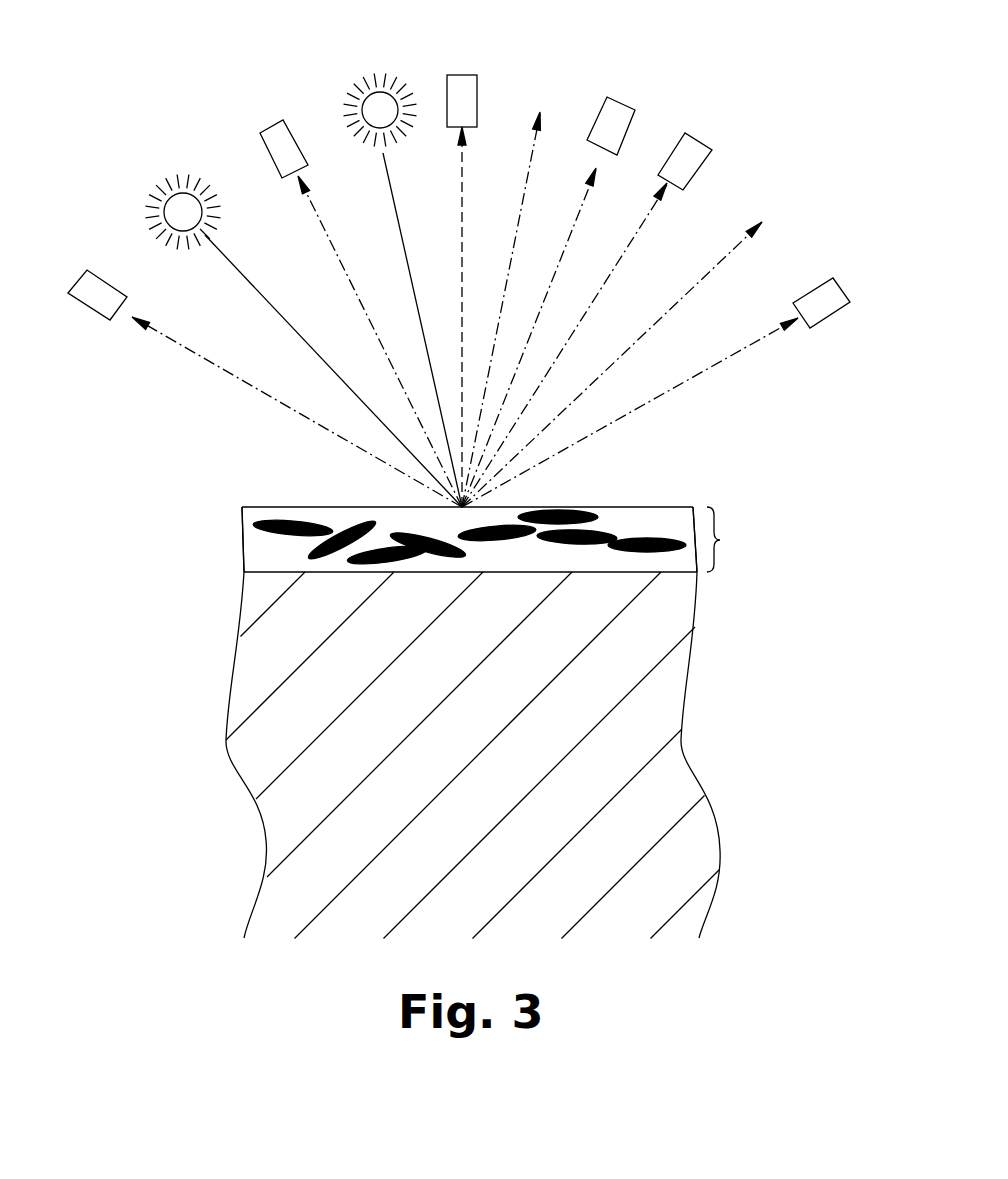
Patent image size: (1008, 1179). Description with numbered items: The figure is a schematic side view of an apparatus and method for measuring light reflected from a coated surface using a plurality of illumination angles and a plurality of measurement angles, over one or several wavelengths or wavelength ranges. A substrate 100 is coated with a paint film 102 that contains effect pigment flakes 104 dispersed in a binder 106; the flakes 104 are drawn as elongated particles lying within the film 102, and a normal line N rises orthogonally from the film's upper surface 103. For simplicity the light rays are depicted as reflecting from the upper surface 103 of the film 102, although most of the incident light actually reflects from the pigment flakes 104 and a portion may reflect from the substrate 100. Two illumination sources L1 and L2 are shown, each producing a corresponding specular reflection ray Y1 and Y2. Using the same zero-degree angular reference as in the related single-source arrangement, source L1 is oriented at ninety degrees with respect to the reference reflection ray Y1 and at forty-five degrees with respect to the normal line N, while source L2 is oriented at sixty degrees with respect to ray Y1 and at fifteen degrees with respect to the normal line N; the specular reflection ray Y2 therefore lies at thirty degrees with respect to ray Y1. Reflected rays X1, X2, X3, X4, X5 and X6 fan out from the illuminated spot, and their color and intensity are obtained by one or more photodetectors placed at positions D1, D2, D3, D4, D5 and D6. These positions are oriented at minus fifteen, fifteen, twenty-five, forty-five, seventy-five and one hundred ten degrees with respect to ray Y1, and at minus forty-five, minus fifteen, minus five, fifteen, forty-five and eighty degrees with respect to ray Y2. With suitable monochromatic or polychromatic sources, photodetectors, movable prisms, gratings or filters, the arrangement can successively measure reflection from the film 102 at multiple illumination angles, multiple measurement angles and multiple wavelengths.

The substrate 100 is at (672, 722).
The paint film 102 is at (505, 539).
The top surface of coating 103 is at (670, 507).
The effect pigment flakes 104 is at (647, 553).
The binder 106 is at (262, 552).
The illumination source L1 is at (160, 194).
The illumination source L2 is at (373, 86).
The photodetector position D1 is at (820, 319).
The photodetector position D2 is at (696, 176).
The photodetector position D3 is at (626, 134).
The photodetector position D4 is at (478, 100).
The photodetector position D5 is at (299, 150).
The photodetector position D6 is at (105, 289).
The normal line N is at (467, 190).
The reflected ray X1 is at (732, 362).
The reflected ray X2 is at (621, 280).
The reflected ray X3 is at (572, 233).
The reflected ray X4 is at (463, 240).
The reflected ray X5 is at (333, 245).
The reflected ray X6 is at (227, 372).
The specular reflection ray Y1 is at (622, 355).
The specular reflection ray Y2 is at (544, 103).